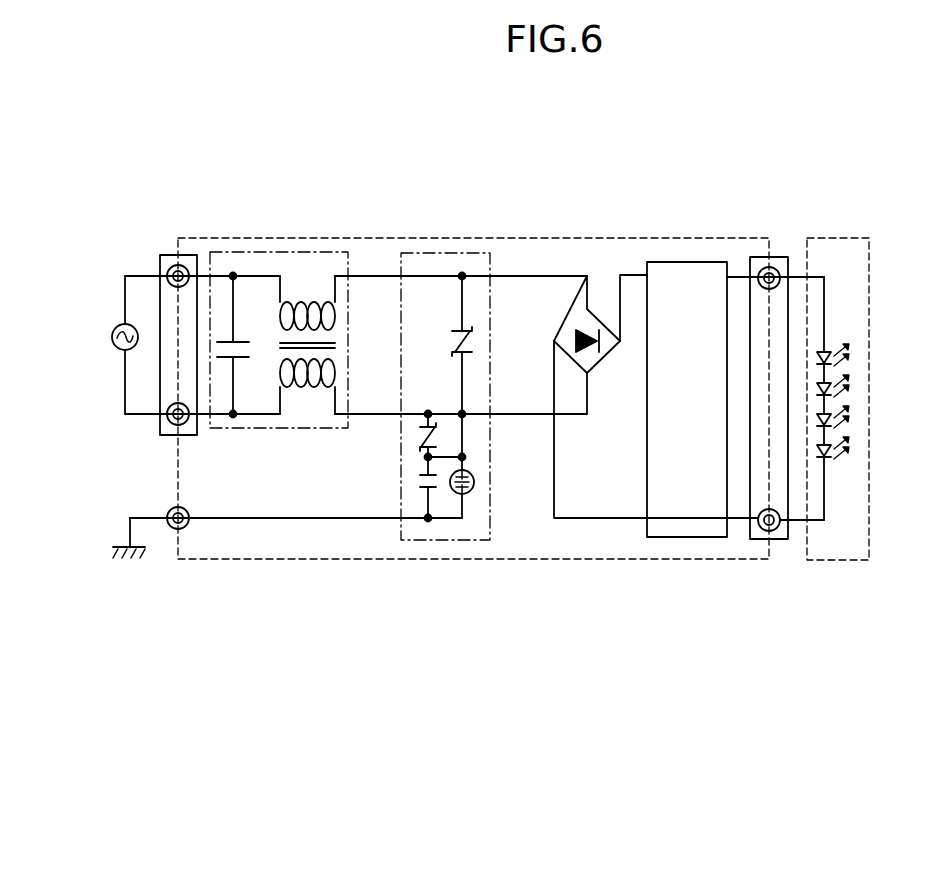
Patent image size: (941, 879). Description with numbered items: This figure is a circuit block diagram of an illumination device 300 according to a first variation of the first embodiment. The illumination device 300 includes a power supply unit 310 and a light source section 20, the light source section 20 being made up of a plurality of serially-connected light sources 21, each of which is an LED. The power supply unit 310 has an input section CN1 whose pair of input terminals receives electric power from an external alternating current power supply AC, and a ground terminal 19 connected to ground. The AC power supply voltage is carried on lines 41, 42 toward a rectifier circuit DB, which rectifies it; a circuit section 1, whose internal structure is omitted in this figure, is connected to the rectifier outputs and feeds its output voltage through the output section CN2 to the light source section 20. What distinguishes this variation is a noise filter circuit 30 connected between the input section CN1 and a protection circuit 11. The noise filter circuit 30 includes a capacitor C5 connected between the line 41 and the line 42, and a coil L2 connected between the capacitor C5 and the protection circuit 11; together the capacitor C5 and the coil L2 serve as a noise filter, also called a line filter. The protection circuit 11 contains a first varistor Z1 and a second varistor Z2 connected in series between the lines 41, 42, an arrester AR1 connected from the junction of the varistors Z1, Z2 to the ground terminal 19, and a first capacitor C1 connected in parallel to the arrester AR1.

The illumination device 300 is at (150, 152).
The power supply unit 310 is at (240, 237).
The line 41 is at (203, 275).
The line 42 is at (205, 437).
The input section CN1 is at (166, 256).
The output section CN2 is at (776, 256).
The alternating current power supply AC is at (114, 328).
The ground terminal 19 is at (168, 516).
The noise filter circuit 30 is at (332, 253).
The capacitor C5 is at (248, 350).
The coil L2 is at (308, 294).
The protection circuit 11 is at (445, 252).
The first varistor Z1 is at (476, 341).
The second varistor Z2 is at (418, 432).
The first capacitor C1 is at (420, 481).
The arrester AR1 is at (475, 486).
The rectifier circuit DB is at (567, 326).
The circuit section 1 is at (703, 261).
The light source section 20 is at (838, 237).
The light source 21 is at (833, 345).